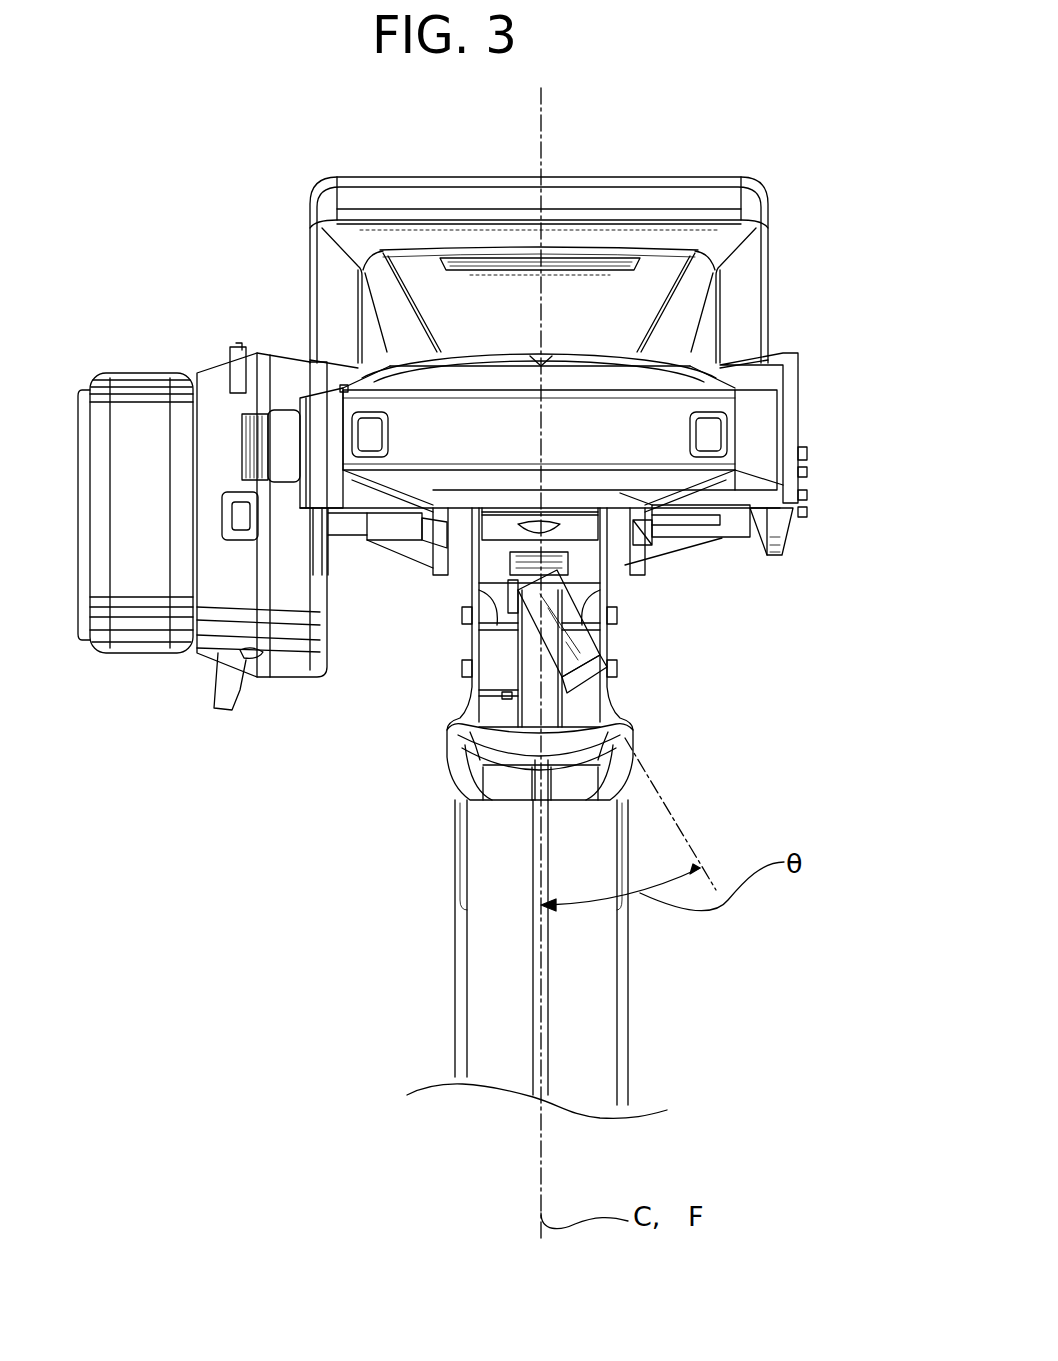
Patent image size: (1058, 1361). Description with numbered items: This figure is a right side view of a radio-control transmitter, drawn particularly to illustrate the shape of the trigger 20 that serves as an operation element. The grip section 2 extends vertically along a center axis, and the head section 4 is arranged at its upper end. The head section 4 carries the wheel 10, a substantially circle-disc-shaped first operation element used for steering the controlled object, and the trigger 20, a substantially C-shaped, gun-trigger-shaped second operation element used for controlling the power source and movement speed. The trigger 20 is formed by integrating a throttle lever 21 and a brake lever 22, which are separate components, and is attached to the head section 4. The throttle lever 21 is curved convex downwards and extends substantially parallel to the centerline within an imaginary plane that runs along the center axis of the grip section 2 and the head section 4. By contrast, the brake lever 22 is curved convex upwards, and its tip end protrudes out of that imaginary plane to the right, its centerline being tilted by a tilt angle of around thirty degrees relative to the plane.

The grip section 2 is at (600, 960).
The head section 4 is at (767, 372).
The wheel 10 is at (142, 385).
The trigger 20 is at (306, 720).
The throttle lever 21 is at (530, 685).
The brake lever 22 is at (530, 627).